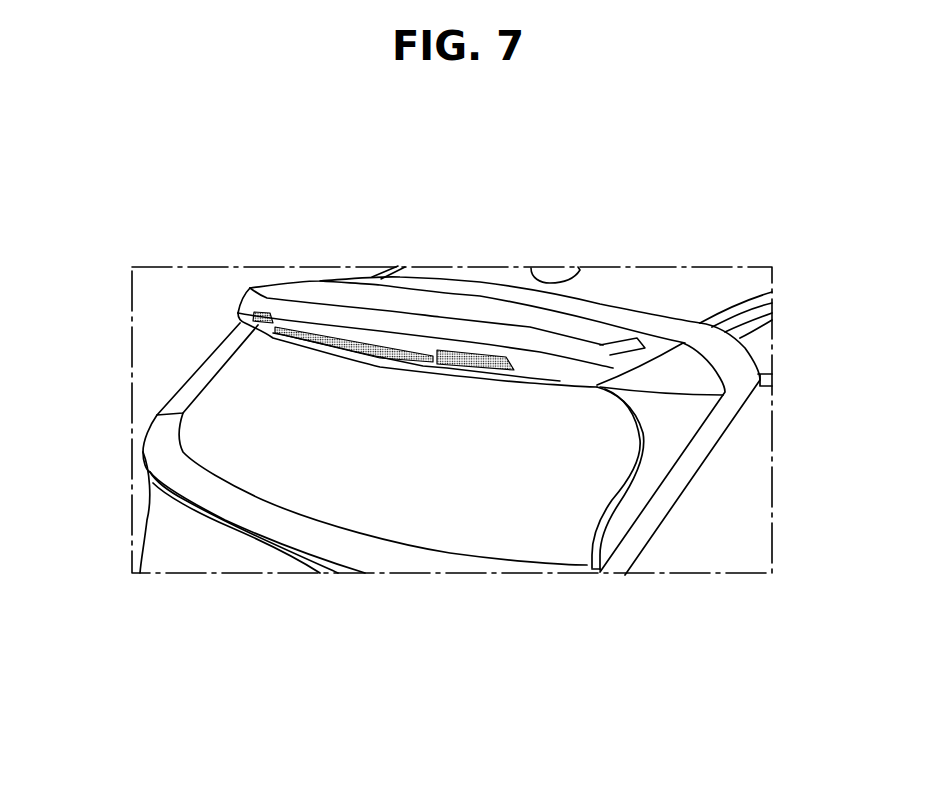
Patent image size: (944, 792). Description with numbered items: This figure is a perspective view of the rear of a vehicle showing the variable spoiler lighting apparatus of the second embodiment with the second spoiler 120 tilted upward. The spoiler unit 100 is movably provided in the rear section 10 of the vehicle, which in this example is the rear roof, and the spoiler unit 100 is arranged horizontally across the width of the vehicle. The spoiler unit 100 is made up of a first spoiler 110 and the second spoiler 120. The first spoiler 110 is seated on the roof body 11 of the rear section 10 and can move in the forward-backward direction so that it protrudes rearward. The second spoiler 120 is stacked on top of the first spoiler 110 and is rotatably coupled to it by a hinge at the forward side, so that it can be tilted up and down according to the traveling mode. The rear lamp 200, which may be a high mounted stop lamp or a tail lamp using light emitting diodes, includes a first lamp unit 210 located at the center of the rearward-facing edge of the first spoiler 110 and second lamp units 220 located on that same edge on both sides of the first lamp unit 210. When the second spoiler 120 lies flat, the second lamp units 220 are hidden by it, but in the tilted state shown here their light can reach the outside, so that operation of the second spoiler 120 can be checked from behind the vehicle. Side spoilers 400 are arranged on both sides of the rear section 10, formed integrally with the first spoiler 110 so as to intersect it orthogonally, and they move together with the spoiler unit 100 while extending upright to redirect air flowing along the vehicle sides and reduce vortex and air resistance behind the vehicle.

The rear section 10 is at (688, 552).
The roof body 11 is at (683, 290).
The spoiler unit 100 is at (435, 426).
The first spoiler 110 is at (240, 313).
The second spoiler 120 is at (298, 305).
The rear lamp 200 is at (383, 513).
The first lamp unit 210 is at (350, 356).
The second lamp units 220 is at (259, 326).
The side spoilers 400 is at (185, 384).